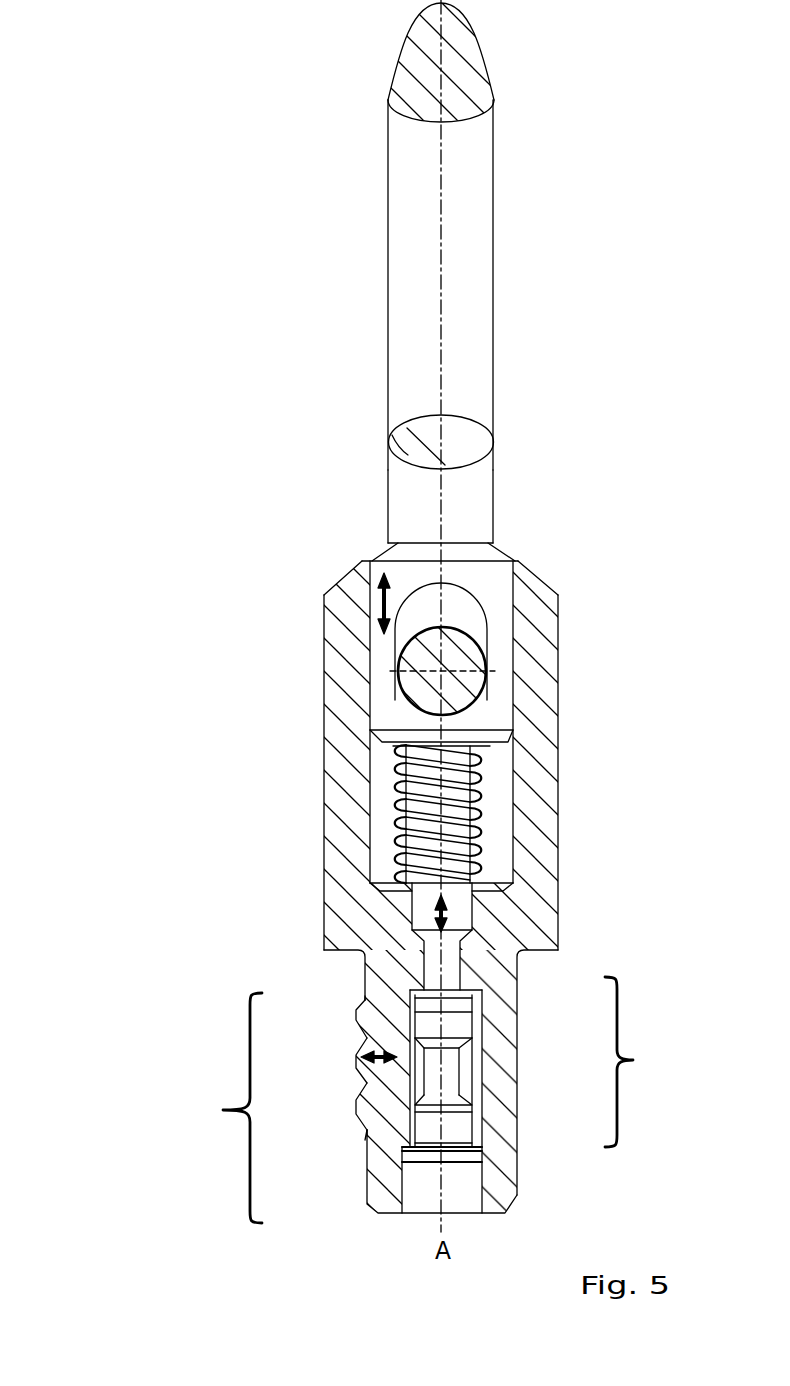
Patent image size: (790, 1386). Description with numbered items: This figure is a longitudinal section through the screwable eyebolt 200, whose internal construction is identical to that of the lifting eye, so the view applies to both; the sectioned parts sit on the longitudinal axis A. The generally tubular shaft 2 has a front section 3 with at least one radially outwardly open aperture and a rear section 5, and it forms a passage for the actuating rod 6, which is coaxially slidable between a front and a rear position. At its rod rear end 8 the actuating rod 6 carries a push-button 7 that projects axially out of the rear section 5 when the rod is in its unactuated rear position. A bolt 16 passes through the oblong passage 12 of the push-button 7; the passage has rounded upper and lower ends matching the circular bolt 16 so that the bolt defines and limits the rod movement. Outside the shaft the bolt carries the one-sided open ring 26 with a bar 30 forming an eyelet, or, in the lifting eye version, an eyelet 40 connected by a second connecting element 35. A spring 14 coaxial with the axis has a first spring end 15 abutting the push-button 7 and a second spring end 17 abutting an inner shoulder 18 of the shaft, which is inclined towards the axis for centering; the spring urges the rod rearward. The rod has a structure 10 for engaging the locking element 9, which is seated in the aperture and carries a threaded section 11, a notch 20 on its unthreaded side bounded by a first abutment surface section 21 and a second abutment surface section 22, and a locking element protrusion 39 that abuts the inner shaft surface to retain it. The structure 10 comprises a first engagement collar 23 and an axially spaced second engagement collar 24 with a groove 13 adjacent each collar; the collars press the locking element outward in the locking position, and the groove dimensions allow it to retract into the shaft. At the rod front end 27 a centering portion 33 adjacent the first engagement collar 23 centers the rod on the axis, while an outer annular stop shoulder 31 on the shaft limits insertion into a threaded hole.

The tubular shaft 2 is at (333, 778).
The front section 3 is at (352, 1229).
The rear section 5 is at (317, 570).
The actuating rod 6 is at (433, 902).
The push-button 7 is at (470, 567).
The rod rear end 8 is at (372, 546).
The locking element 9 is at (286, 1108).
The structure 10 is at (541, 1062).
The threaded section 11 is at (363, 1078).
The oblong passage 12 is at (470, 605).
The groove 13 is at (455, 965).
The spring 14 is at (482, 812).
The first spring end 15 is at (488, 750).
The bolt 16 is at (460, 670).
The second spring end 17 is at (487, 876).
The inner shoulder 18 is at (382, 879).
The notch 20 is at (367, 1090).
The first abutment surface section 21 is at (370, 1133).
The second abutment surface section 22 is at (370, 1036).
The first engagement collar 23 is at (457, 1125).
The second engagement collar 24 is at (457, 1030).
The one-sided open ring 26 is at (468, 220).
The rod front end 27 is at (468, 1184).
The bar 30 is at (468, 440).
The outer annular stop shoulder 31 is at (347, 953).
The centering portion 33 is at (473, 1158).
The second connecting element 35 is at (470, 500).
The locking element protrusion 39 is at (403, 1002).
The eyelet 40 is at (440, 65).
The eyebolt 200 is at (238, 627).